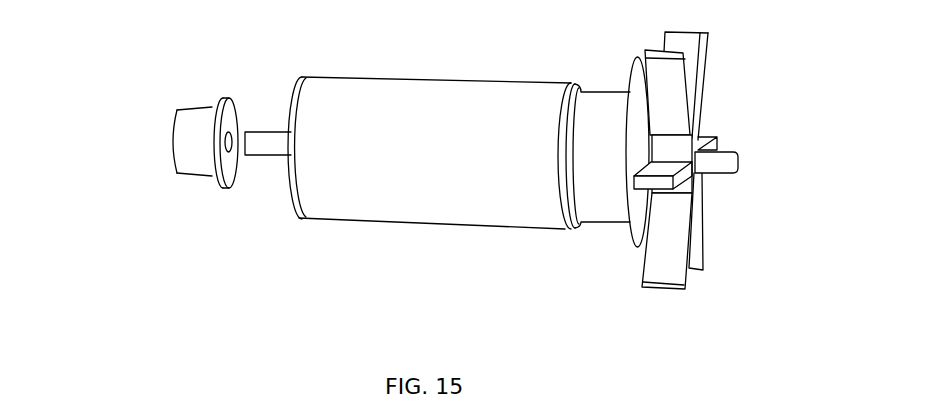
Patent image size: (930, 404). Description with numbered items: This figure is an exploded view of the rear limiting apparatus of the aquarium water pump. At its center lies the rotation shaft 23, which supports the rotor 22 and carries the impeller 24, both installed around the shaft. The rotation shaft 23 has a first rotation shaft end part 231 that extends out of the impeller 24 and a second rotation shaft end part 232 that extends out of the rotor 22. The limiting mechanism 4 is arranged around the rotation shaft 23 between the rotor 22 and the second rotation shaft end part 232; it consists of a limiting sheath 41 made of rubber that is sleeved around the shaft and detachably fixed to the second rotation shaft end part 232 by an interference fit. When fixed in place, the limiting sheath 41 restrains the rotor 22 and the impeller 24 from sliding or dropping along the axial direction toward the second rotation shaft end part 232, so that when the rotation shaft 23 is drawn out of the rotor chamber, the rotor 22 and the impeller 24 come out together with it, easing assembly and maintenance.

The limiting mechanism 4 is at (124, 226).
The limiting sheath 41 is at (185, 142).
The rotor 22 is at (476, 103).
The rotation shaft 23 is at (272, 137).
The second rotation shaft end part 232 is at (250, 160).
The first rotation shaft end part 231 is at (723, 170).
The impeller 24 is at (682, 98).